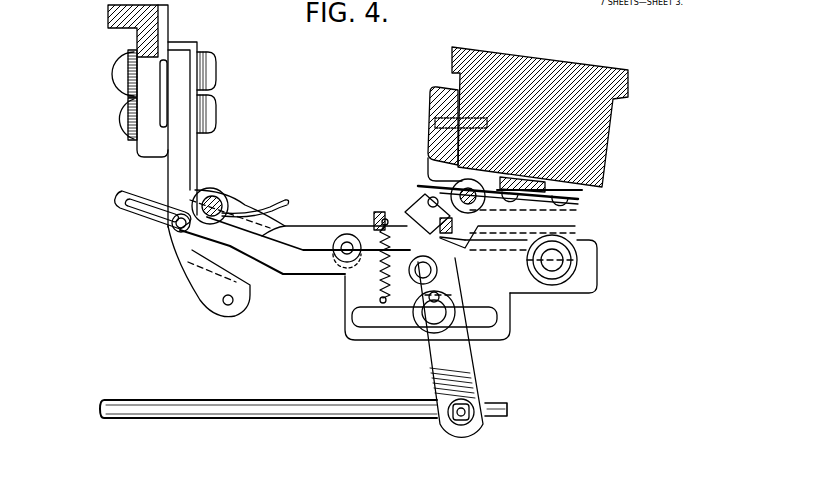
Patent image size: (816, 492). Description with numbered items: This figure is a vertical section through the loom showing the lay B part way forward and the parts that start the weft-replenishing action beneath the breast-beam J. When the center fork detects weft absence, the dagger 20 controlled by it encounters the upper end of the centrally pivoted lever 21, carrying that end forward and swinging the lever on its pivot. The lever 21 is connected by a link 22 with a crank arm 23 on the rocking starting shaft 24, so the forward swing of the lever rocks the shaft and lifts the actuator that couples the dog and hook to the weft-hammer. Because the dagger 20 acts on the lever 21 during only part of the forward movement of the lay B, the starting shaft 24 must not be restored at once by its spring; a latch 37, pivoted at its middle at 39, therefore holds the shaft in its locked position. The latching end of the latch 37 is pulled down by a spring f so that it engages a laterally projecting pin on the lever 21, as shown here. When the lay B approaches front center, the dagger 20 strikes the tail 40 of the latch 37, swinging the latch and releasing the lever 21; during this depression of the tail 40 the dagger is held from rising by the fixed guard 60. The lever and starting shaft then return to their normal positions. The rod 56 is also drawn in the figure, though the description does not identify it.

The breast-beam J is at (107, 17).
The lay B is at (585, 133).
The dagger 20 is at (413, 214).
The centrally pivoted lever 21 is at (450, 369).
The link 22 is at (288, 258).
The crank arm 23 is at (170, 228).
The rocking shaft 24 is at (213, 198).
The latch 37 is at (447, 242).
The pivot 39 is at (349, 235).
The tail 40 is at (240, 212).
The rod 56 is at (295, 418).
The fixed guard 60 is at (289, 205).
The spring f is at (383, 298).